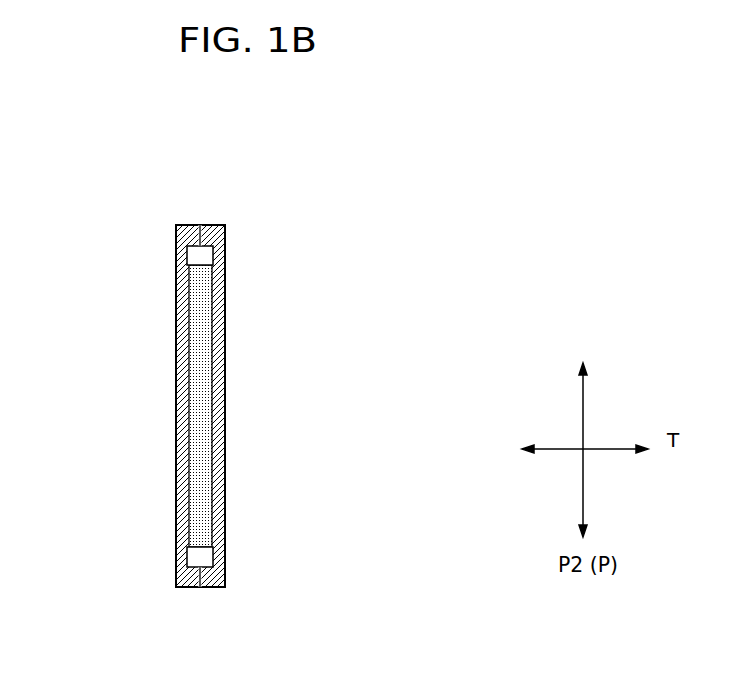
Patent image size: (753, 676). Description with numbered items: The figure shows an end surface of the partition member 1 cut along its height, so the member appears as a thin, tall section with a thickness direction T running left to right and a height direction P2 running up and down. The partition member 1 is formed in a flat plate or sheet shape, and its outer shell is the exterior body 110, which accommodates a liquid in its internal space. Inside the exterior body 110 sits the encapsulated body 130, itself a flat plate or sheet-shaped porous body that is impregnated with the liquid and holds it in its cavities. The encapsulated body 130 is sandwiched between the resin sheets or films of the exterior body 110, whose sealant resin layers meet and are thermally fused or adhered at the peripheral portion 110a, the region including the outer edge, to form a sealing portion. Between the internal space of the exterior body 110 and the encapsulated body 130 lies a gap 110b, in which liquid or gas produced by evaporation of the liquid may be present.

The partition member 1 is at (282, 208).
The exterior body 110 is at (225, 455).
The peripheral portion 110a is at (193, 577).
The gap 110b is at (201, 257).
The encapsulated body 130 is at (200, 313).